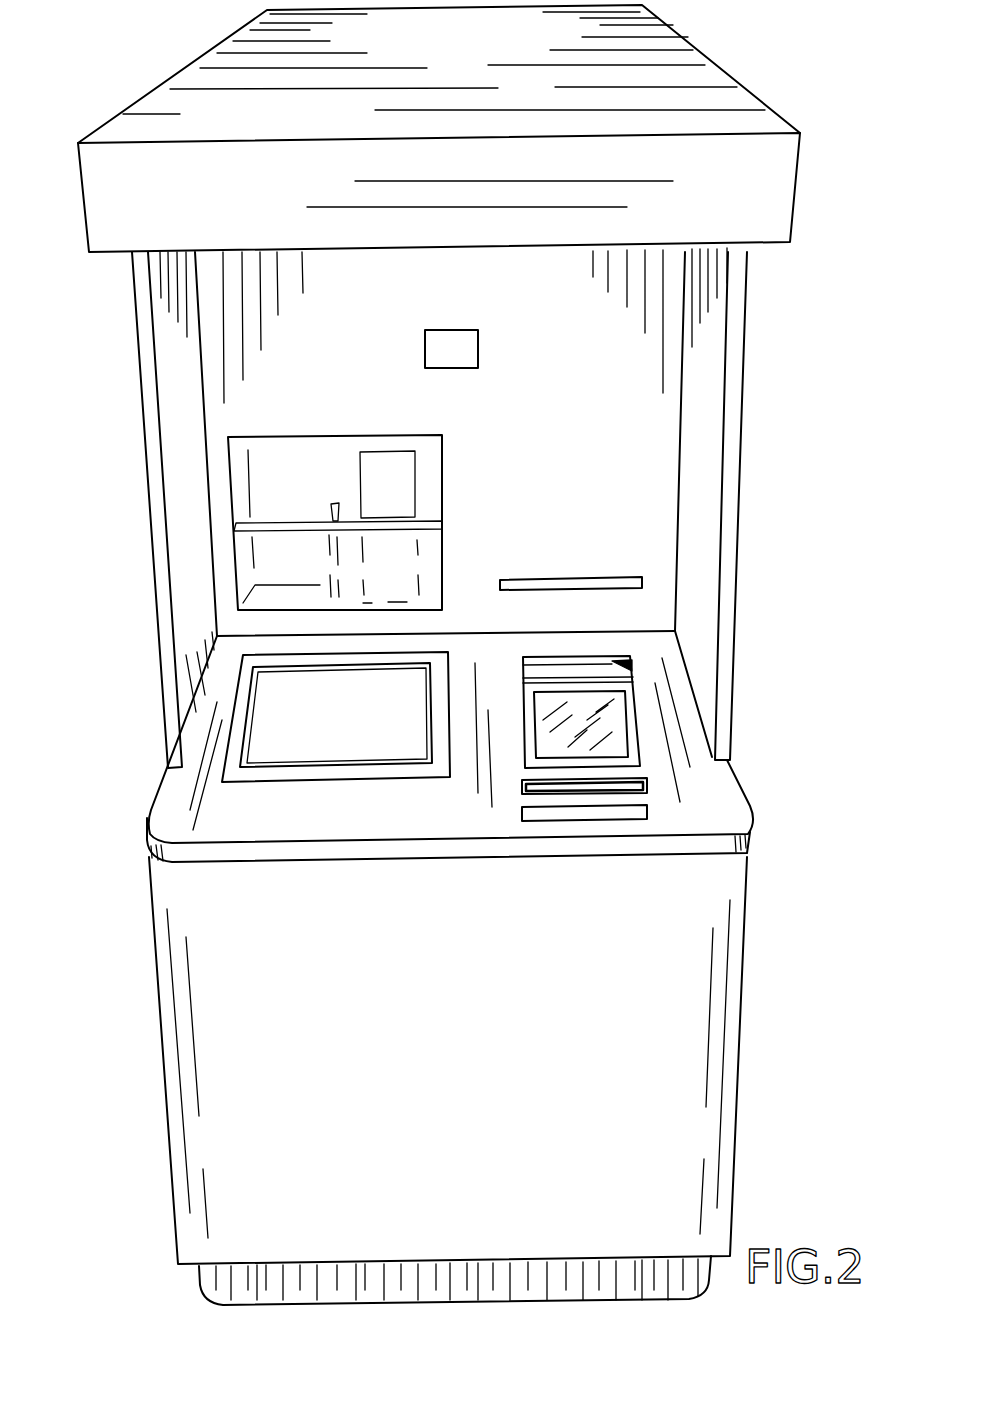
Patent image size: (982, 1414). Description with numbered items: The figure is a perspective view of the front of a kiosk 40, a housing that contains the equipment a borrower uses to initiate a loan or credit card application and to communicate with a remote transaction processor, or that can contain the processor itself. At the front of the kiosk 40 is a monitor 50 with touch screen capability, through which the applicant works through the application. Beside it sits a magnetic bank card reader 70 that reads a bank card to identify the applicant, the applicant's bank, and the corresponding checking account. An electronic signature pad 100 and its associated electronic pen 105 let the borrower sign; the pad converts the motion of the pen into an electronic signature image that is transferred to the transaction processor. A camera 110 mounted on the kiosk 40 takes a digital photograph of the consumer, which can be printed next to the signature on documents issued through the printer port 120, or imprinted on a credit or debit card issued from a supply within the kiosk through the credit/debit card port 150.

The kiosk 40 is at (147, 92).
The monitor 50 is at (310, 707).
The magnetic bank card reader 70 is at (679, 673).
The electronic signature pad 100 is at (593, 700).
The electronic pen 105 is at (590, 778).
The camera 110 is at (479, 340).
The printer port 120 is at (562, 578).
The credit/debit card port 150 is at (598, 820).